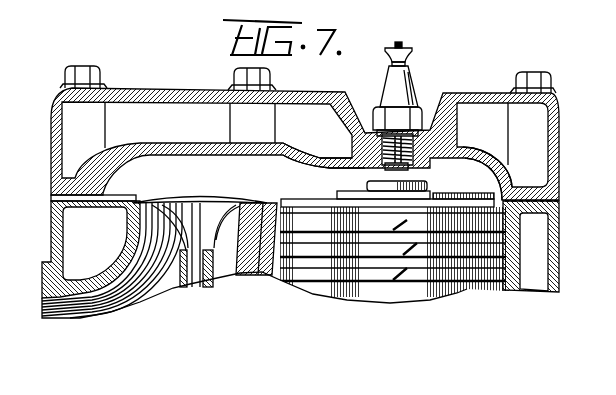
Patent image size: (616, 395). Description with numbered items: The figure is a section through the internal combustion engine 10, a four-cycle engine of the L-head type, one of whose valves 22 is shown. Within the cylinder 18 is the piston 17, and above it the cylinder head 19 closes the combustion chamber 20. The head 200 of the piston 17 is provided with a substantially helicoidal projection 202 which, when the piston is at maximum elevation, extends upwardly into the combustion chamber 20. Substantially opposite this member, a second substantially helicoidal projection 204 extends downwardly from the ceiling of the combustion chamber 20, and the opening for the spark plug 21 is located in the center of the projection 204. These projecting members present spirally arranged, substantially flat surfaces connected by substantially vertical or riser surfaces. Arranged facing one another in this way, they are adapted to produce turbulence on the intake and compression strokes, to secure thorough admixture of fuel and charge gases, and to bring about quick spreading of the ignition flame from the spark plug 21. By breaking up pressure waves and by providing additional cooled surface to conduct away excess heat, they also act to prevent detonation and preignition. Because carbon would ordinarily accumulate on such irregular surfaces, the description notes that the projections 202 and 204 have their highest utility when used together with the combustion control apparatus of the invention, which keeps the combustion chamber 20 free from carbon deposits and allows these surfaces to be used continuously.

The internal combustion engine 10 is at (437, 252).
The piston 17 is at (465, 292).
The cylinder 18 is at (515, 262).
The cylinder head 19 is at (559, 137).
The combustion chamber 20 is at (284, 147).
The spark plug 21 is at (418, 108).
The valve 22 is at (197, 224).
The head of piston 200 is at (506, 175).
The helicoidal projection 202 is at (437, 188).
The helicoidal projection 204 is at (350, 167).